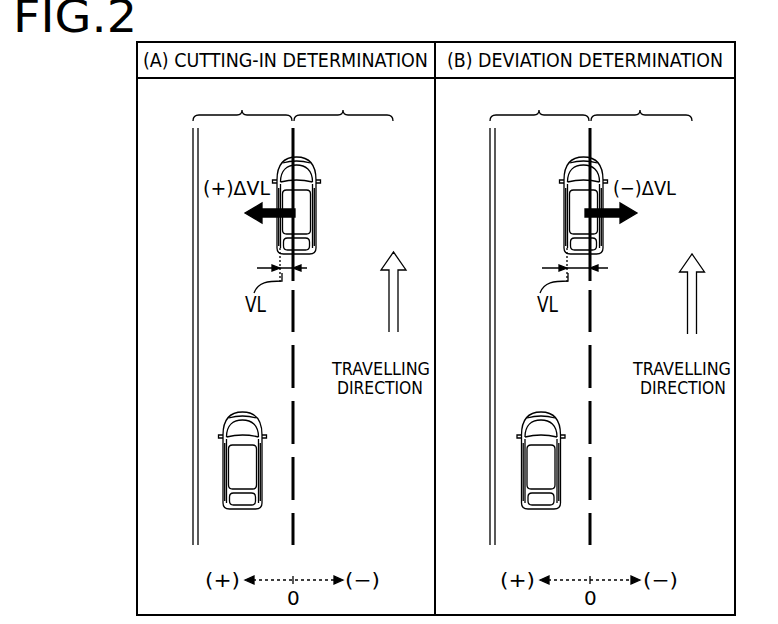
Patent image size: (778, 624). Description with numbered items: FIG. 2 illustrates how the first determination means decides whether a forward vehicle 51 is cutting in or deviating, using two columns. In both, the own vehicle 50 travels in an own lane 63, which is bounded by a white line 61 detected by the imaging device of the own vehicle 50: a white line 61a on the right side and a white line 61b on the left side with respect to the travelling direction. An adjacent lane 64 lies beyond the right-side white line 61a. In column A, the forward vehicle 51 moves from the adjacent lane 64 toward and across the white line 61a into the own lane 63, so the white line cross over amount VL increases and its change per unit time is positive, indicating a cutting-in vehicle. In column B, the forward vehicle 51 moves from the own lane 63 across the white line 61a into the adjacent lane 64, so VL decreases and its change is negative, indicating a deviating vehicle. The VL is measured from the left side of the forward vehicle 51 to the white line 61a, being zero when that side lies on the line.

The own vehicle 50 is at (222, 462).
The forward vehicle 51 is at (316, 195).
The white line 61 is at (292, 533).
The white line on the right side 61a is at (296, 478).
The white line on the left side 61b is at (193, 353).
The own lane 63 is at (391, 105).
The adjacent lane 64 is at (493, 105).